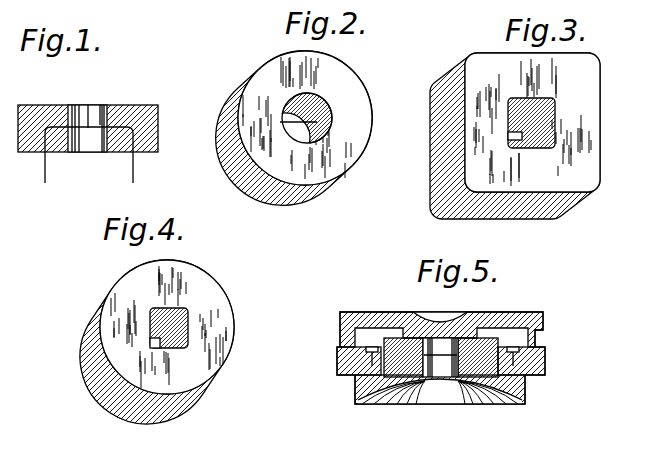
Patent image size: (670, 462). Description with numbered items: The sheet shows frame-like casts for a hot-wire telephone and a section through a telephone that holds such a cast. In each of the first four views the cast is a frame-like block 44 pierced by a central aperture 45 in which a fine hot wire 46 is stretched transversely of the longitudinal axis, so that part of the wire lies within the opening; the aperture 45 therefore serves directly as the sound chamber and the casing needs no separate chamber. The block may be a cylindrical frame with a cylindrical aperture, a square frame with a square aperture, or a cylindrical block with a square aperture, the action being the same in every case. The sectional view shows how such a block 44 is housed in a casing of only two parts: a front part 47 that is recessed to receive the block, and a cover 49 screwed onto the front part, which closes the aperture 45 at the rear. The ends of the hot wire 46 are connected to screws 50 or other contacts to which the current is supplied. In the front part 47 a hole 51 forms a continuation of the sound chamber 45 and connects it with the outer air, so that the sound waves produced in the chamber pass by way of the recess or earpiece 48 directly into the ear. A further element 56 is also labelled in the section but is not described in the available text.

In FIG. 1, the block 44 is at (157, 110).
In FIG. 2, the block 44 is at (355, 147).
In FIG. 3, the block 44 is at (438, 110).
In FIG. 4, the block 44 is at (227, 337).
In FIG. 5, the block 44 is at (390, 363).
In FIG. 1, the aperture 45 is at (85, 115).
In FIG. 2, the aperture 45 is at (320, 115).
In FIG. 3, the aperture 45 is at (553, 118).
In FIG. 4, the aperture 45 is at (187, 315).
In FIG. 5, the aperture 45 is at (447, 362).
In FIG. 1, the hot wire 46 is at (90, 128).
In FIG. 2, the hot wire 46 is at (306, 124).
In FIG. 3, the hot wire 46 is at (522, 138).
In FIG. 4, the hot wire 46 is at (152, 345).
In FIG. 5, the hot wire 46 is at (430, 397).
In FIG. 5, the front part 47 is at (527, 393).
In FIG. 5, the recess 48 is at (490, 397).
In FIG. 5, the cover 49 is at (343, 313).
In FIG. 5, the screws 50 is at (542, 349).
In FIG. 5, the hole 51 is at (402, 393).
In FIG. 5, the element 56 is at (377, 459).